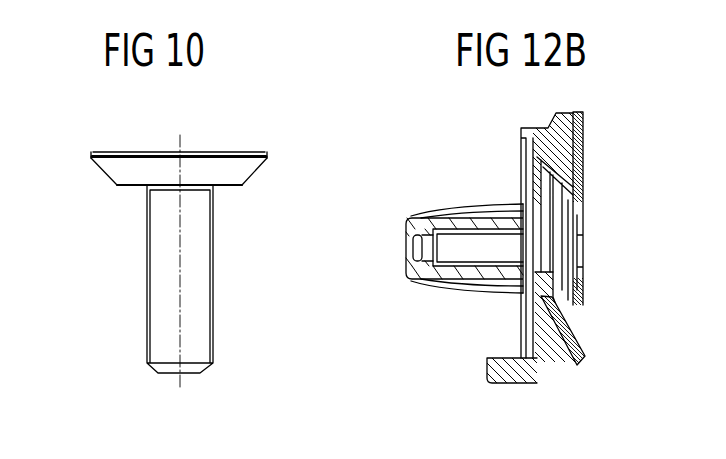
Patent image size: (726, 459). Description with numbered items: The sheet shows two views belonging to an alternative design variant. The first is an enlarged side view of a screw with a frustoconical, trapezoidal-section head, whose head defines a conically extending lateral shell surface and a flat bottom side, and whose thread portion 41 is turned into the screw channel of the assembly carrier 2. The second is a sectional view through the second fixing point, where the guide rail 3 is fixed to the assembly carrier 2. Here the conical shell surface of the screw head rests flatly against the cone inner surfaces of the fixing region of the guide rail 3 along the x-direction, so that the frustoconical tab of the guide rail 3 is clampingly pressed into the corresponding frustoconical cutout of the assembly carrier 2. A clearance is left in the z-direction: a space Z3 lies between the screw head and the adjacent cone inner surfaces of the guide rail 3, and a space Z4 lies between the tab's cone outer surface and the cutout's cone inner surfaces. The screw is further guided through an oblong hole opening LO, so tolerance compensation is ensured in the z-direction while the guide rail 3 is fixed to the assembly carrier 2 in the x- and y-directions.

In FIG. 10, the thread portion 41 is at (198, 318).
In FIG. 12B, the assembly carrier 2 is at (553, 256).
In FIG. 12B, the guide rail 3 is at (588, 125).
In FIG. 12B, the space Z3 is at (563, 192).
In FIG. 12B, the space Z4 is at (547, 193).
In FIG. 12B, the oblong hole opening LO is at (523, 205).